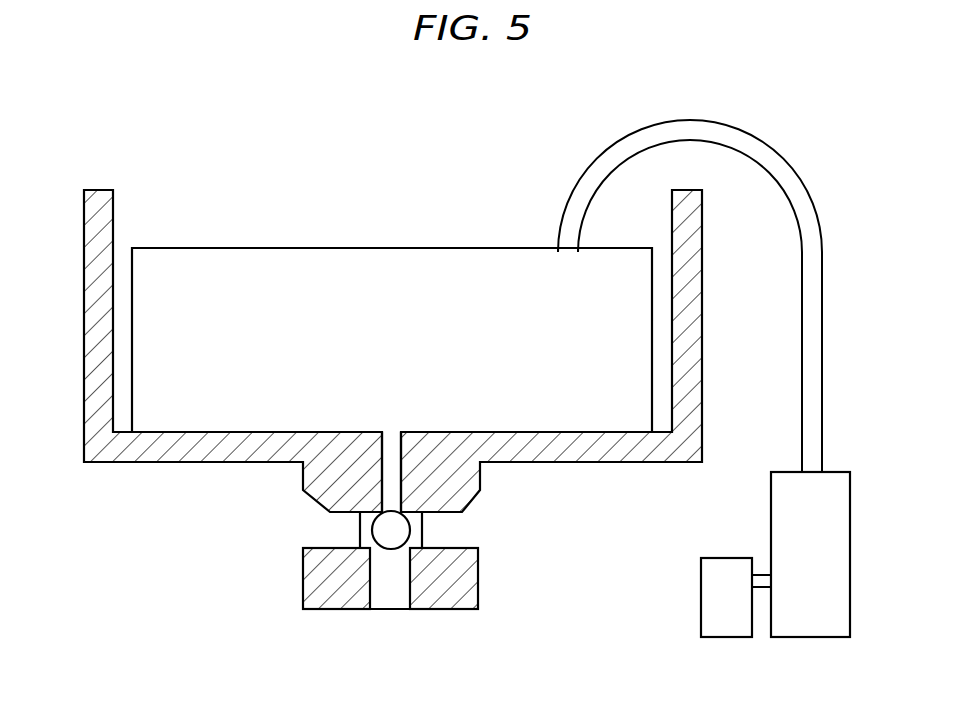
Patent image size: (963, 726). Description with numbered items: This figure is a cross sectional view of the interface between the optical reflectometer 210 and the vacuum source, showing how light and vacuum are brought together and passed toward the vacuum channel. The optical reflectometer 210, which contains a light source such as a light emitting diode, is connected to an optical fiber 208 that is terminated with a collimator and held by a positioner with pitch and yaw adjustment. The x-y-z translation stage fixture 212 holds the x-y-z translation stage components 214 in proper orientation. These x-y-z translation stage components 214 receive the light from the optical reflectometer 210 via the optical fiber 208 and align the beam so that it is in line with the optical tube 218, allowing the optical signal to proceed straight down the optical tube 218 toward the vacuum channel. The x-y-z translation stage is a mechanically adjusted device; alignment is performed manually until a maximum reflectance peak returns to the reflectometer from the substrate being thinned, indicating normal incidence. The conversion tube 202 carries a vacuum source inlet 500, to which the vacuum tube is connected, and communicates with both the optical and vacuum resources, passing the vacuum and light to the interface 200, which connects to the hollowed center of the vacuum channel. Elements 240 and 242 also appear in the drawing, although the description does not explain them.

The interface 200 is at (443, 611).
The conversion tube 202 is at (360, 544).
The optical fiber 208 is at (682, 119).
The optical reflectometer 210 is at (851, 510).
The x-y-z translation stage fixture 212 is at (83, 408).
The x-y-z translation stage components 214 is at (249, 258).
The optical tube 218 is at (392, 445).
The controller 240 is at (728, 638).
The connection line 242 is at (762, 573).
The vacuum source inlet 500 is at (398, 528).